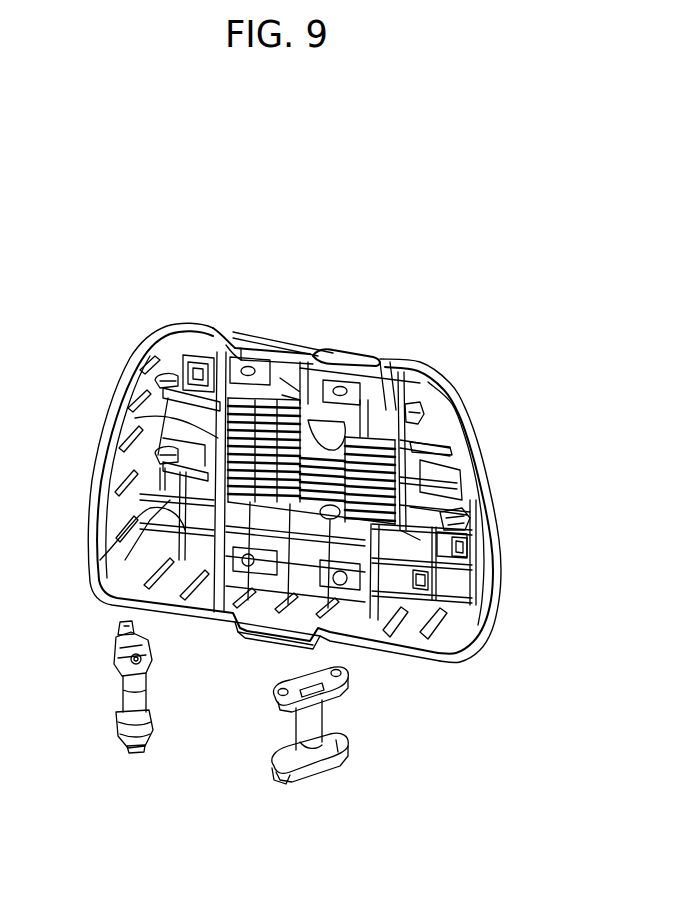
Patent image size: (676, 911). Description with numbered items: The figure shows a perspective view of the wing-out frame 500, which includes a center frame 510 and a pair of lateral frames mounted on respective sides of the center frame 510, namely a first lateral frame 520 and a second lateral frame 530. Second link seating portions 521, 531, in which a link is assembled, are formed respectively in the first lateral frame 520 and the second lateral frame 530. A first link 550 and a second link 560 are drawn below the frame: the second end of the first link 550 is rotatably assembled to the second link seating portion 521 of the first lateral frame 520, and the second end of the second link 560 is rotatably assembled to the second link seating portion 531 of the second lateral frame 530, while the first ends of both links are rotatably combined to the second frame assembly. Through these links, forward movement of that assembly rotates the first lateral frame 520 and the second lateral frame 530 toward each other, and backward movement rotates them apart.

The wing-out frame 500 is at (363, 273).
The center frame 510 is at (279, 347).
The first lateral frame 520 is at (183, 331).
The second link seating portion 521 is at (195, 468).
The second lateral frame 530 is at (410, 382).
The second link seating portion 531 is at (467, 500).
The first link 550 is at (123, 685).
The second link 560 is at (312, 718).